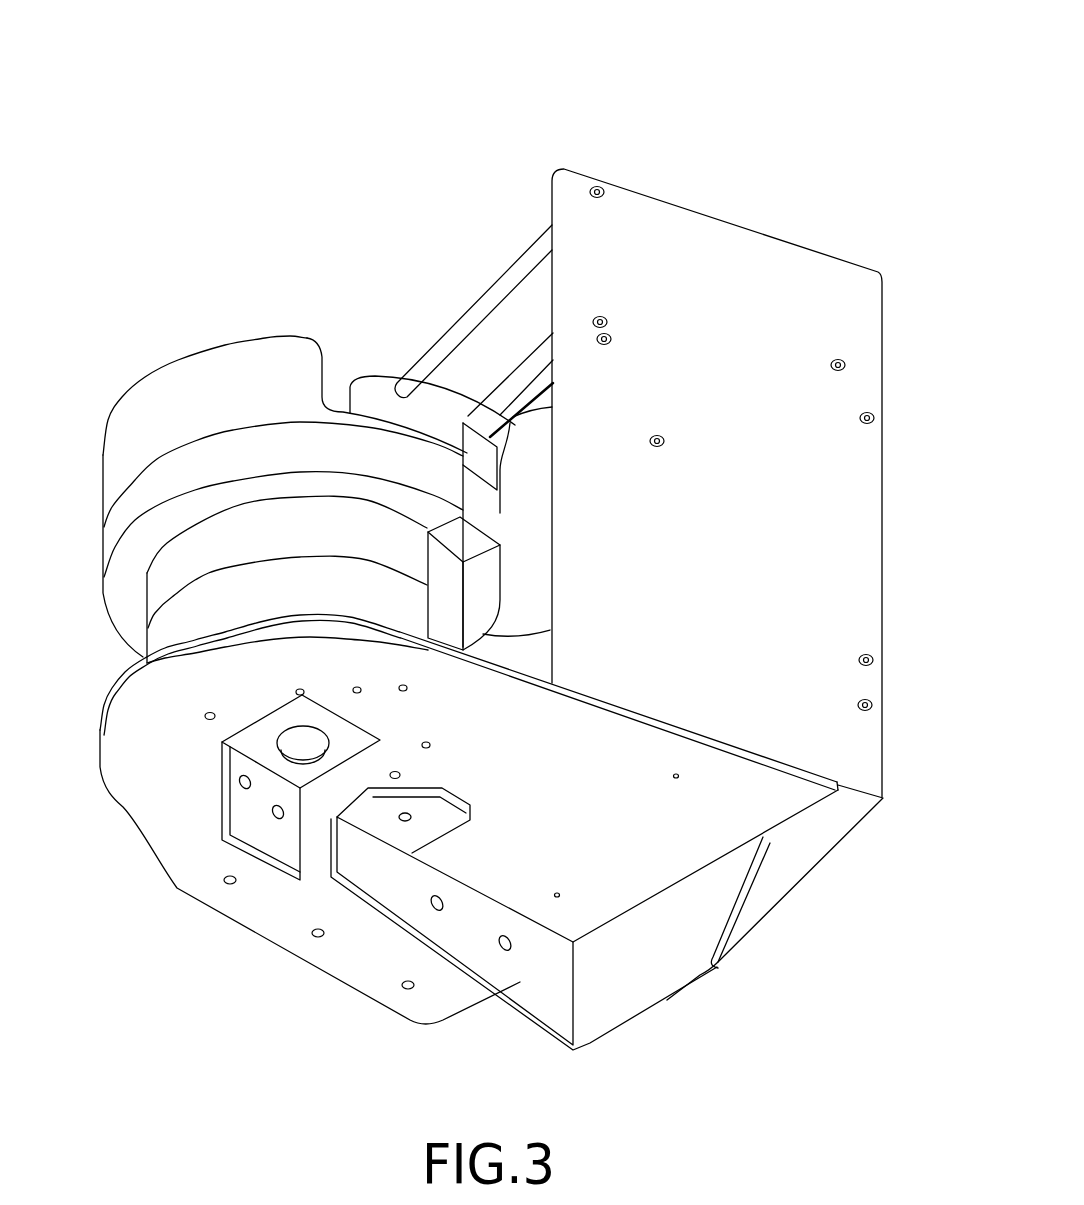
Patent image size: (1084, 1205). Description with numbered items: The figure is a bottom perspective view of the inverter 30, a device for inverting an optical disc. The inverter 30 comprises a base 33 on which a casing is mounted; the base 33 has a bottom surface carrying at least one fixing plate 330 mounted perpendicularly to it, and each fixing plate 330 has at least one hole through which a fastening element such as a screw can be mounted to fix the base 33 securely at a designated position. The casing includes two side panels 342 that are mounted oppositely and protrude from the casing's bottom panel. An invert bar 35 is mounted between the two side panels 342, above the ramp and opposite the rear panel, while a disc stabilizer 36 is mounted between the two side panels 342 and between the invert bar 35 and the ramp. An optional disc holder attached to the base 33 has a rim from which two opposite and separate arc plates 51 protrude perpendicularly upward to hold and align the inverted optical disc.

The inverter 30 is at (722, 108).
The base 33 is at (170, 808).
The fixing plate 330 is at (255, 830).
The side panel 342 is at (783, 272).
The invert bar 35 is at (503, 280).
The disc stabilizer 36 is at (517, 385).
The arc plate 51 is at (207, 379).